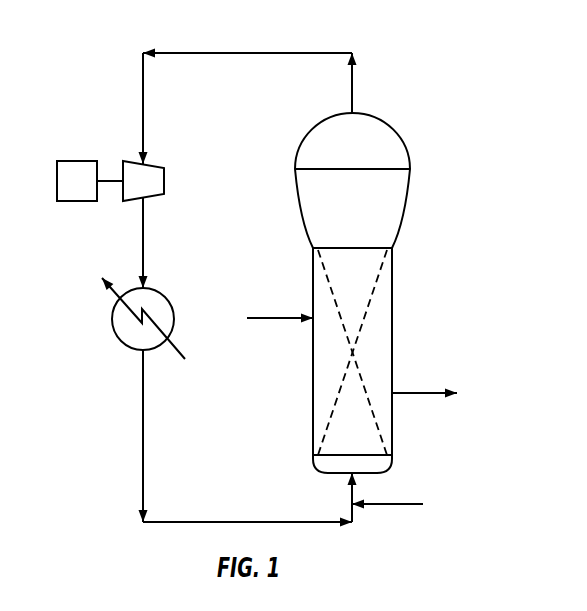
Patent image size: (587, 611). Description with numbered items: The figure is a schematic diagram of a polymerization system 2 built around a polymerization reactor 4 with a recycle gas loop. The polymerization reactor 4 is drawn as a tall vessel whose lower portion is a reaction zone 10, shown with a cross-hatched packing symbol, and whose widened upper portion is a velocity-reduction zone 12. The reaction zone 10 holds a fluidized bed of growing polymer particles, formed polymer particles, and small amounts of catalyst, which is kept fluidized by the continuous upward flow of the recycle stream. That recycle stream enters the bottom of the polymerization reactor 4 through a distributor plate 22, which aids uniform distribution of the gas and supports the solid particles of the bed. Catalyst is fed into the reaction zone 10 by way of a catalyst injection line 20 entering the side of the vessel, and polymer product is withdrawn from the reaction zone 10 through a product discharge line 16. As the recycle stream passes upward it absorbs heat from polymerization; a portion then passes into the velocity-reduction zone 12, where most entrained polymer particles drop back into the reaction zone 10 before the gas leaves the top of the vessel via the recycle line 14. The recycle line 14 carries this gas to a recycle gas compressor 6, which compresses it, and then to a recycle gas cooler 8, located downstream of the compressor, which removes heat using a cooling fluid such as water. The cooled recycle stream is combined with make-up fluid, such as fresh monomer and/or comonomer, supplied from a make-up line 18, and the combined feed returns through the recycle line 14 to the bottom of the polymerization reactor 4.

The polymerization system 2 is at (424, 30).
The polymerization reactor 4 is at (393, 333).
The recycle gas compressor 6 is at (140, 160).
The recycle gas cooler 8 is at (115, 335).
The reaction zone 10 is at (362, 280).
The velocity-reduction zone 12 is at (340, 212).
The recycle line 14 is at (248, 52).
The product discharge line 16 is at (413, 397).
The make-up line 18 is at (393, 507).
The catalyst injection line 20 is at (278, 313).
The distributor plate 22 is at (331, 458).